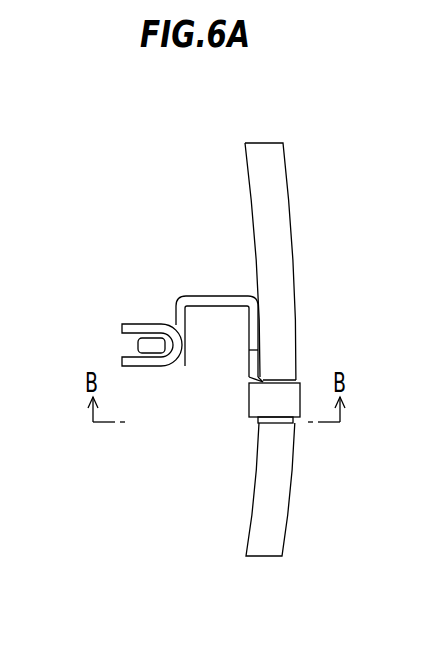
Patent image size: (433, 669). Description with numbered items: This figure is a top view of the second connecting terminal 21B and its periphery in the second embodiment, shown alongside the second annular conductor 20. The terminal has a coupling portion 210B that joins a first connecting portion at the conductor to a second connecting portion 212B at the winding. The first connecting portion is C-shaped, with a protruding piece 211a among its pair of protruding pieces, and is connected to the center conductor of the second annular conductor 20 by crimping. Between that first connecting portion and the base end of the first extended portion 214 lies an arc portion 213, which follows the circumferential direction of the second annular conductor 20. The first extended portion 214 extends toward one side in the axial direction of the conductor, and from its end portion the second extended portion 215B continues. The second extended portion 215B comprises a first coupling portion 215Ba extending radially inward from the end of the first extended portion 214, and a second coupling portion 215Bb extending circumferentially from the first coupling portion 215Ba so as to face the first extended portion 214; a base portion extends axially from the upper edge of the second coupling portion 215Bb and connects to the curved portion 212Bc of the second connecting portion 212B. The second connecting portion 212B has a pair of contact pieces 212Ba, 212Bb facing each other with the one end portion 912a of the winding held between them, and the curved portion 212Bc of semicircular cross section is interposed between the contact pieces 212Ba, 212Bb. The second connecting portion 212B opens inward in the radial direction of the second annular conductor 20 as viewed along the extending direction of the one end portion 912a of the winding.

The second annular conductor 20 is at (280, 565).
The second connecting terminal 21B is at (199, 330).
The coupling portion 210B is at (253, 292).
The protruding piece 211a is at (293, 395).
The arc portion 213 is at (255, 363).
The first extended portion 214 is at (255, 332).
The second extended portion 215B is at (177, 280).
The first coupling portion 215Ba is at (213, 297).
The second coupling portion 215Bb is at (141, 300).
The second connecting portion 212B is at (141, 393).
The contact piece 212Ba is at (138, 328).
The contact piece 212Bb is at (138, 363).
The curved portion 212Bc is at (185, 357).
The one end portion of the winding 912a is at (140, 346).